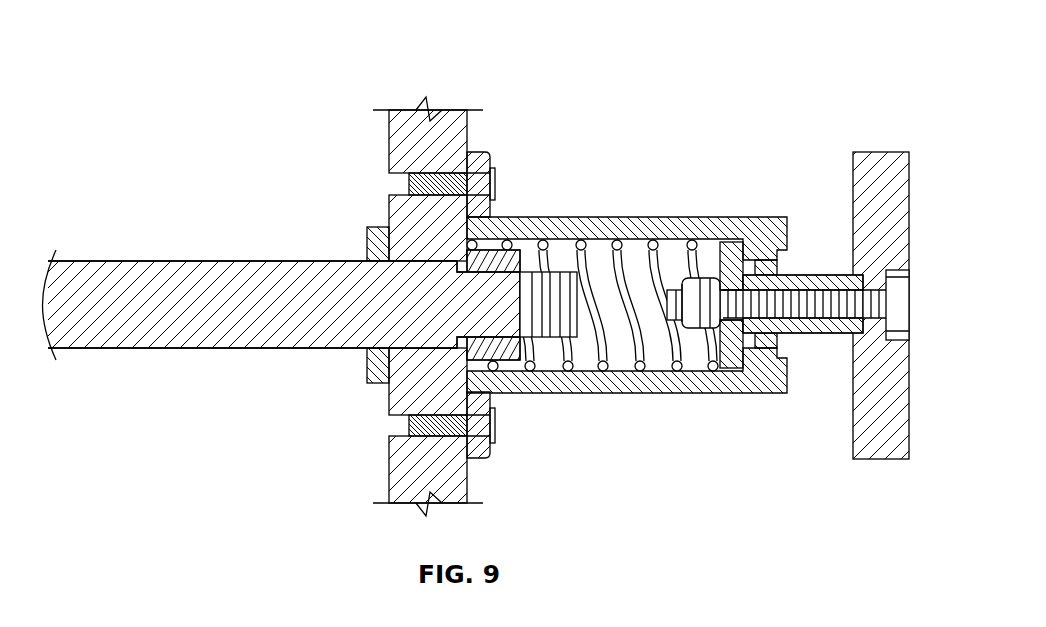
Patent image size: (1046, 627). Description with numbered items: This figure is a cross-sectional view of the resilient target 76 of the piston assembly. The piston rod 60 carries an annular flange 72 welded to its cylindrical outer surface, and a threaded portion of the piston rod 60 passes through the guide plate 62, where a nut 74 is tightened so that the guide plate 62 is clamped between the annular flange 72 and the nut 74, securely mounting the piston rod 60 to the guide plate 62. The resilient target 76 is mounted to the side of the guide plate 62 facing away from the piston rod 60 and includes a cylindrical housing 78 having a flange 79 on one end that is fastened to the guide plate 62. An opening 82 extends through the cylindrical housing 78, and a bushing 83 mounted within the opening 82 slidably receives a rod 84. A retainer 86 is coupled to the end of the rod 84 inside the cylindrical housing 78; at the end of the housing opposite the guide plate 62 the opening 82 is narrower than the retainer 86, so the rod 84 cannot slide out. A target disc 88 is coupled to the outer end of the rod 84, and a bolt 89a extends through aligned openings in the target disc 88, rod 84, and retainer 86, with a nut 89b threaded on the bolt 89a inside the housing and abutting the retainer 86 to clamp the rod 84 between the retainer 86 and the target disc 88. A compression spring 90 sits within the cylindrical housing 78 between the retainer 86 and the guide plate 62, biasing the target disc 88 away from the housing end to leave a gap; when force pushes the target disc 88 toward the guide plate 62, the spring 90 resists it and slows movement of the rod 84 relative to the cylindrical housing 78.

The piston rod 60 is at (177, 270).
The guide plate 62 is at (393, 395).
The annular flange 72 is at (370, 240).
The nut 74 is at (505, 370).
The resilient target 76 is at (627, 295).
The cylindrical housing 78 is at (615, 220).
The flange 79 is at (480, 162).
The opening 82 is at (680, 250).
The bushing 83 is at (755, 260).
The rod 84 is at (810, 276).
The retainer 86 is at (730, 248).
The target disc 88 is at (868, 165).
The bolt 89a is at (898, 305).
The nut 89b is at (693, 335).
The compression spring 90 is at (590, 220).